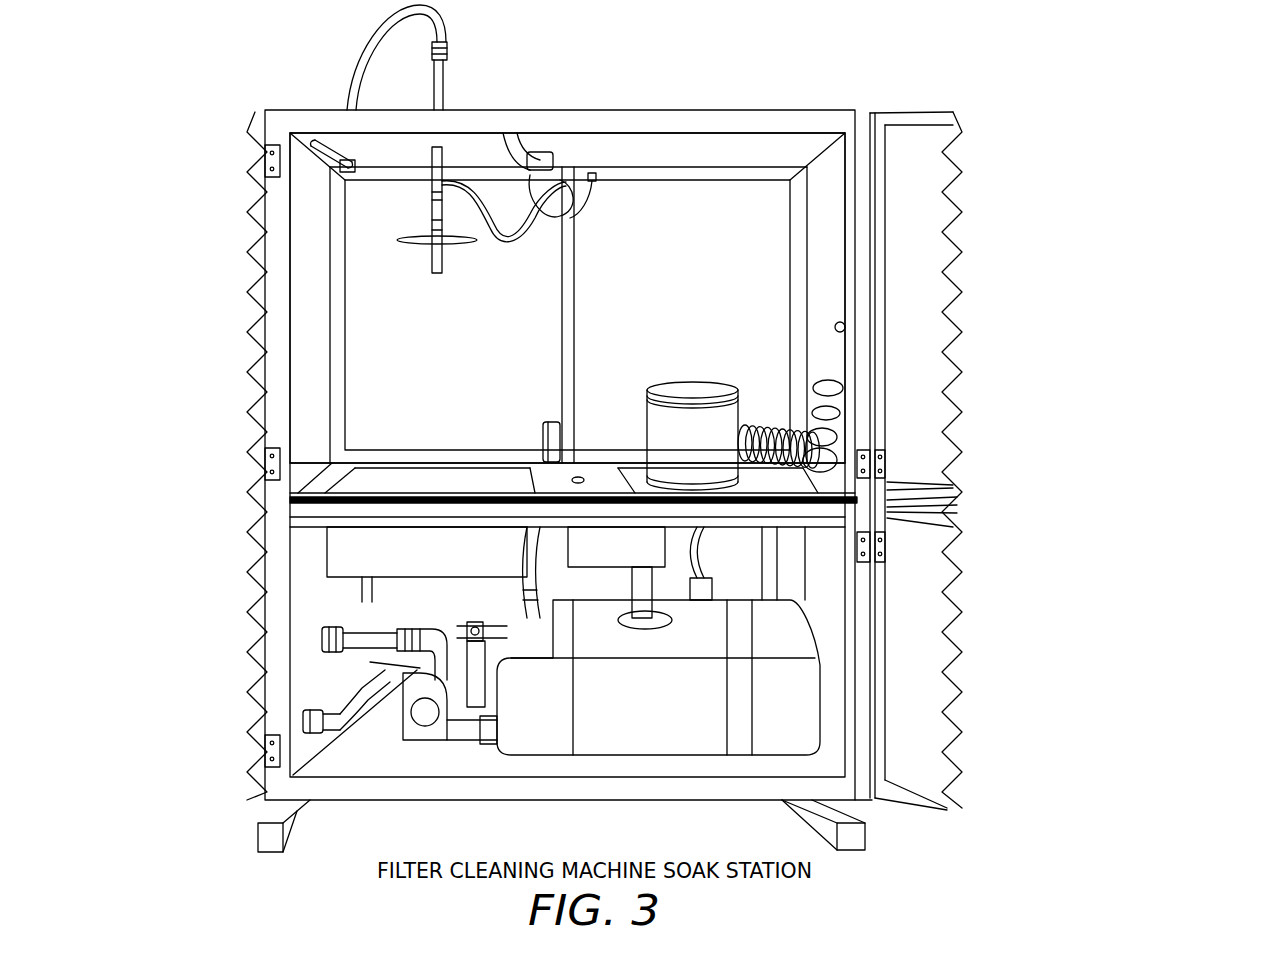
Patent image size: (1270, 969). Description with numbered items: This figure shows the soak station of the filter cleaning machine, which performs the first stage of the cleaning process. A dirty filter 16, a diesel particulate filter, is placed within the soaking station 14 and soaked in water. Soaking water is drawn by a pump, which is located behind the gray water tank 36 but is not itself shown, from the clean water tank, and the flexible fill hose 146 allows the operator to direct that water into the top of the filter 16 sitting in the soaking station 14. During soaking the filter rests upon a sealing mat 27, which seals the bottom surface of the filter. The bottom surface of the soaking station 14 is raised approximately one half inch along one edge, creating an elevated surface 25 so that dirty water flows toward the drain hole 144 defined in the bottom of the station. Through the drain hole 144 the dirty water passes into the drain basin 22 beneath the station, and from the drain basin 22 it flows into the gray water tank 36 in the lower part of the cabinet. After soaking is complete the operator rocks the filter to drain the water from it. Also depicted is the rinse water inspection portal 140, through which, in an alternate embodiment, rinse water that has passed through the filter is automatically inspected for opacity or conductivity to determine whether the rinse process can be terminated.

The soaking station 14 is at (688, 252).
The drain hole 144 is at (577, 480).
The dirty filter 16 is at (693, 445).
The fill hose 146 is at (818, 478).
The sealing mat 27 is at (790, 487).
The elevated surface 25 is at (820, 480).
The drain basin 22 is at (630, 540).
The gray water tank 36 is at (687, 717).
The rinse water inspection portal 140 is at (517, 600).